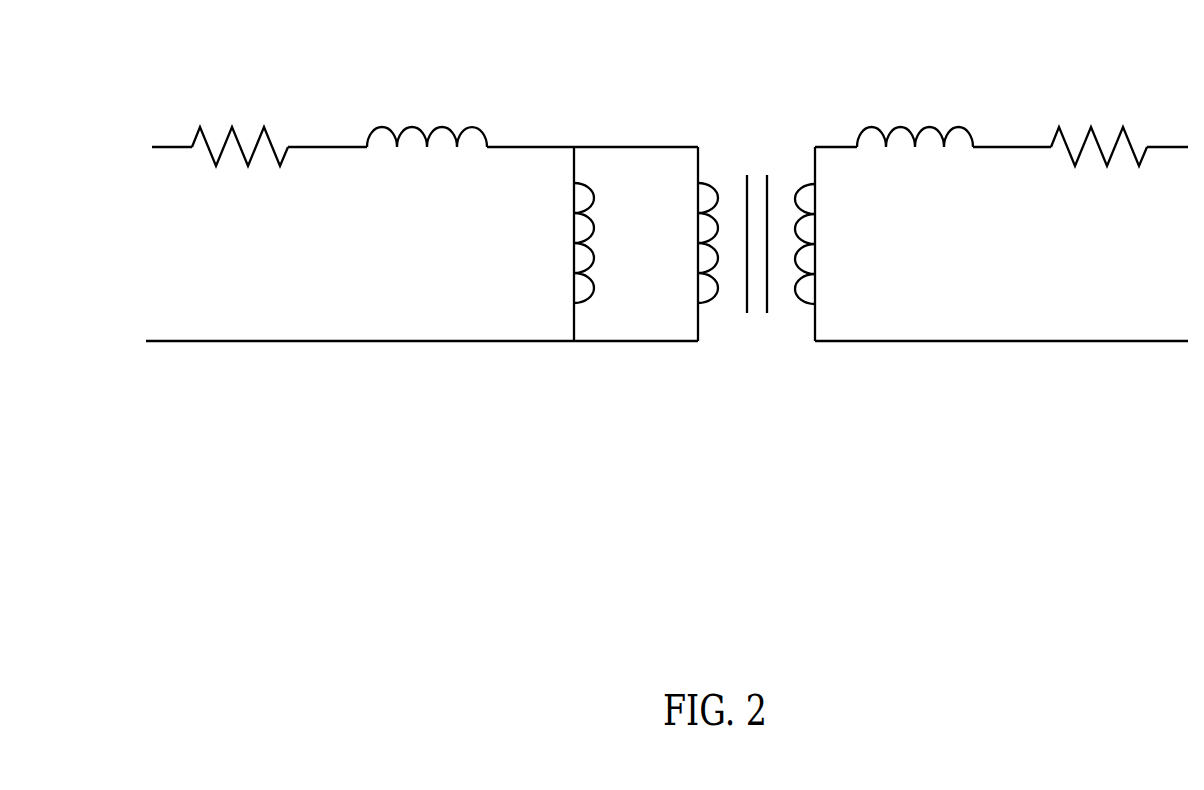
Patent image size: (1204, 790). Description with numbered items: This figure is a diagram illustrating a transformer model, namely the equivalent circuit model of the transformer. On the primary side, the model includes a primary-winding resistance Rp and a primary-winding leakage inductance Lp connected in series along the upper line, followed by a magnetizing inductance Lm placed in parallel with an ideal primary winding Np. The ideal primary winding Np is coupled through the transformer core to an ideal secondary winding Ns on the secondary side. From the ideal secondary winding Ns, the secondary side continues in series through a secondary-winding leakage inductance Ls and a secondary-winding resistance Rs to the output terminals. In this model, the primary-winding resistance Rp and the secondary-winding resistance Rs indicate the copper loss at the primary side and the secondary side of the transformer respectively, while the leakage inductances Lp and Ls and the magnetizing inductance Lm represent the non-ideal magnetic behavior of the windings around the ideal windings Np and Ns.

The primary-winding resistance Rp is at (240, 109).
The primary-winding leakage inductance Lp is at (427, 99).
The magnetizing inductance Lm is at (551, 243).
The ideal primary winding Np is at (678, 243).
The ideal secondary winding Ns is at (840, 244).
The secondary-winding leakage inductance Ls is at (915, 99).
The secondary-winding resistance Rs is at (1099, 109).